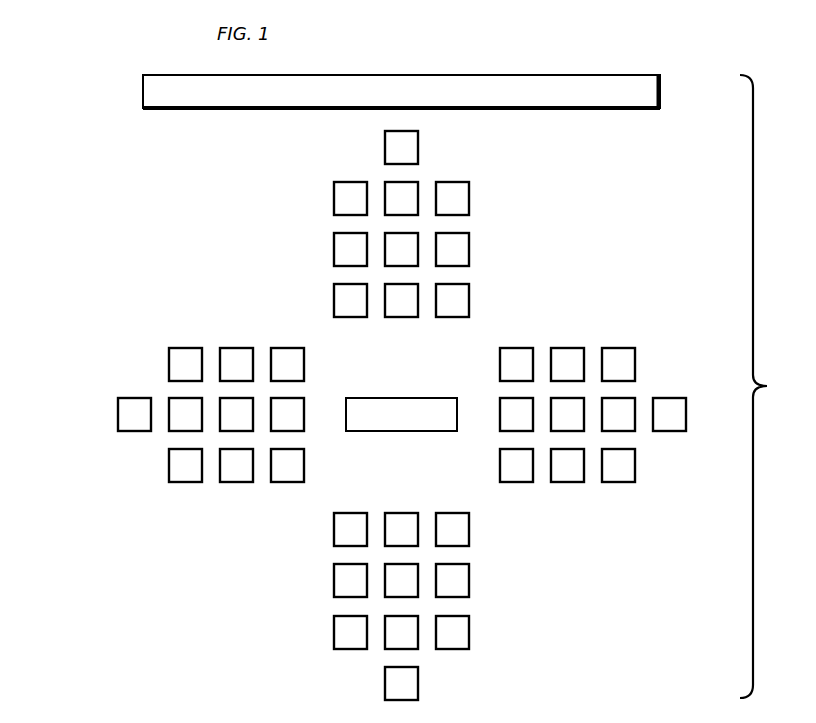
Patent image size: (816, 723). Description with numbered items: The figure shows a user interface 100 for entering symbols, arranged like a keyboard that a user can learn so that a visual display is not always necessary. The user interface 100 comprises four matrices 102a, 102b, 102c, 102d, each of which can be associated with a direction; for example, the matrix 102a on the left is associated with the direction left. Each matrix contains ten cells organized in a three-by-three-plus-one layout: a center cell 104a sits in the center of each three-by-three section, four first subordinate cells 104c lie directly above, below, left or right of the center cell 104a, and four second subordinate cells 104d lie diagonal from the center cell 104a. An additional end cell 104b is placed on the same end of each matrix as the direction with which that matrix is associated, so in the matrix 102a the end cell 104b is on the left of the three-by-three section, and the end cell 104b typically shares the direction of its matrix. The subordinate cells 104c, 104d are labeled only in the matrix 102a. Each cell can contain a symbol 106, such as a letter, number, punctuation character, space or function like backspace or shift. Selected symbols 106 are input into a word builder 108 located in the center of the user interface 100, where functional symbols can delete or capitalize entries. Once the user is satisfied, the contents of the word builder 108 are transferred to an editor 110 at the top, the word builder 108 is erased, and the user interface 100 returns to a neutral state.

The user interface 100 is at (620, 645).
The matrix 102a is at (145, 330).
The matrix 102b is at (383, 229).
The matrix 102c is at (668, 368).
The matrix 102d is at (490, 551).
The center cell 104a is at (388, 239).
The end cell 104b is at (418, 152).
The first subordinate cell 104c is at (222, 468).
The second subordinate cell 104d is at (282, 347).
The symbol 106 is at (469, 200).
The word builder 108 is at (378, 431).
The editor 110 is at (143, 87).